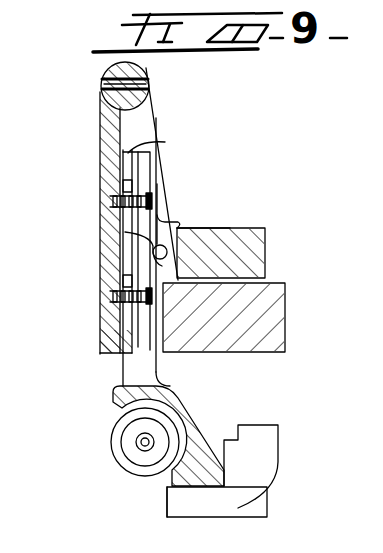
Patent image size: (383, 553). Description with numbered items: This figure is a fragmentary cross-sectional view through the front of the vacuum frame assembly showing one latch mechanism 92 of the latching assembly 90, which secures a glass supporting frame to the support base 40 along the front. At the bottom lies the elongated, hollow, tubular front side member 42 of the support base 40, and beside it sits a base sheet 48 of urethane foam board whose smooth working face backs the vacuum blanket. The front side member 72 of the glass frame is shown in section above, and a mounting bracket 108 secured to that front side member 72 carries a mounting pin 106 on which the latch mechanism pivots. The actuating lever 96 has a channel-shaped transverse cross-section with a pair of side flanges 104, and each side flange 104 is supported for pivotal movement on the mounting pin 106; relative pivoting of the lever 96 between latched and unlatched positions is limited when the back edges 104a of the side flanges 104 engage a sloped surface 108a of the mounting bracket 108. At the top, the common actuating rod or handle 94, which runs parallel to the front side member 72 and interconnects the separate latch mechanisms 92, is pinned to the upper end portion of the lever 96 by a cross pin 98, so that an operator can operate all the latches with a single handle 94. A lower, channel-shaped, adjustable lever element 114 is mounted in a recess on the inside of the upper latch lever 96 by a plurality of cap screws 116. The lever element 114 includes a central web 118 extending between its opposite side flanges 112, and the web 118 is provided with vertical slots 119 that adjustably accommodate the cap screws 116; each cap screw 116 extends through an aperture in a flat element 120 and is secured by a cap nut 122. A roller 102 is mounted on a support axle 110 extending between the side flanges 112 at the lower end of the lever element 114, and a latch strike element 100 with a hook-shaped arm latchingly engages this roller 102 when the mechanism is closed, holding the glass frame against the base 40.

The support base 40 is at (160, 499).
The front side member 42 is at (197, 503).
The base sheet 48 is at (262, 458).
The front side member 72 is at (265, 321).
The latching assembly 90 is at (76, 380).
The latch mechanism 92 is at (165, 222).
The actuating rod or handle 94 is at (147, 71).
The actuating lever 96 is at (100, 132).
The cross pin 98 is at (107, 97).
The latch strike element 100 is at (190, 413).
The roller 102 is at (110, 456).
The side flange 104 is at (165, 142).
The back edge 104a is at (150, 103).
The mounting pin 106 is at (125, 232).
The mounting bracket 108 is at (238, 228).
The sloped surface 108a is at (225, 228).
The support axle 110 is at (140, 440).
The side flange 112 is at (130, 375).
The lever element 114 is at (160, 365).
The cap screw 116 is at (110, 199).
The central web 118 is at (160, 137).
The vertical slot 119 is at (113, 166).
The flat element 120 is at (133, 183).
The cap nut 122 is at (157, 184).